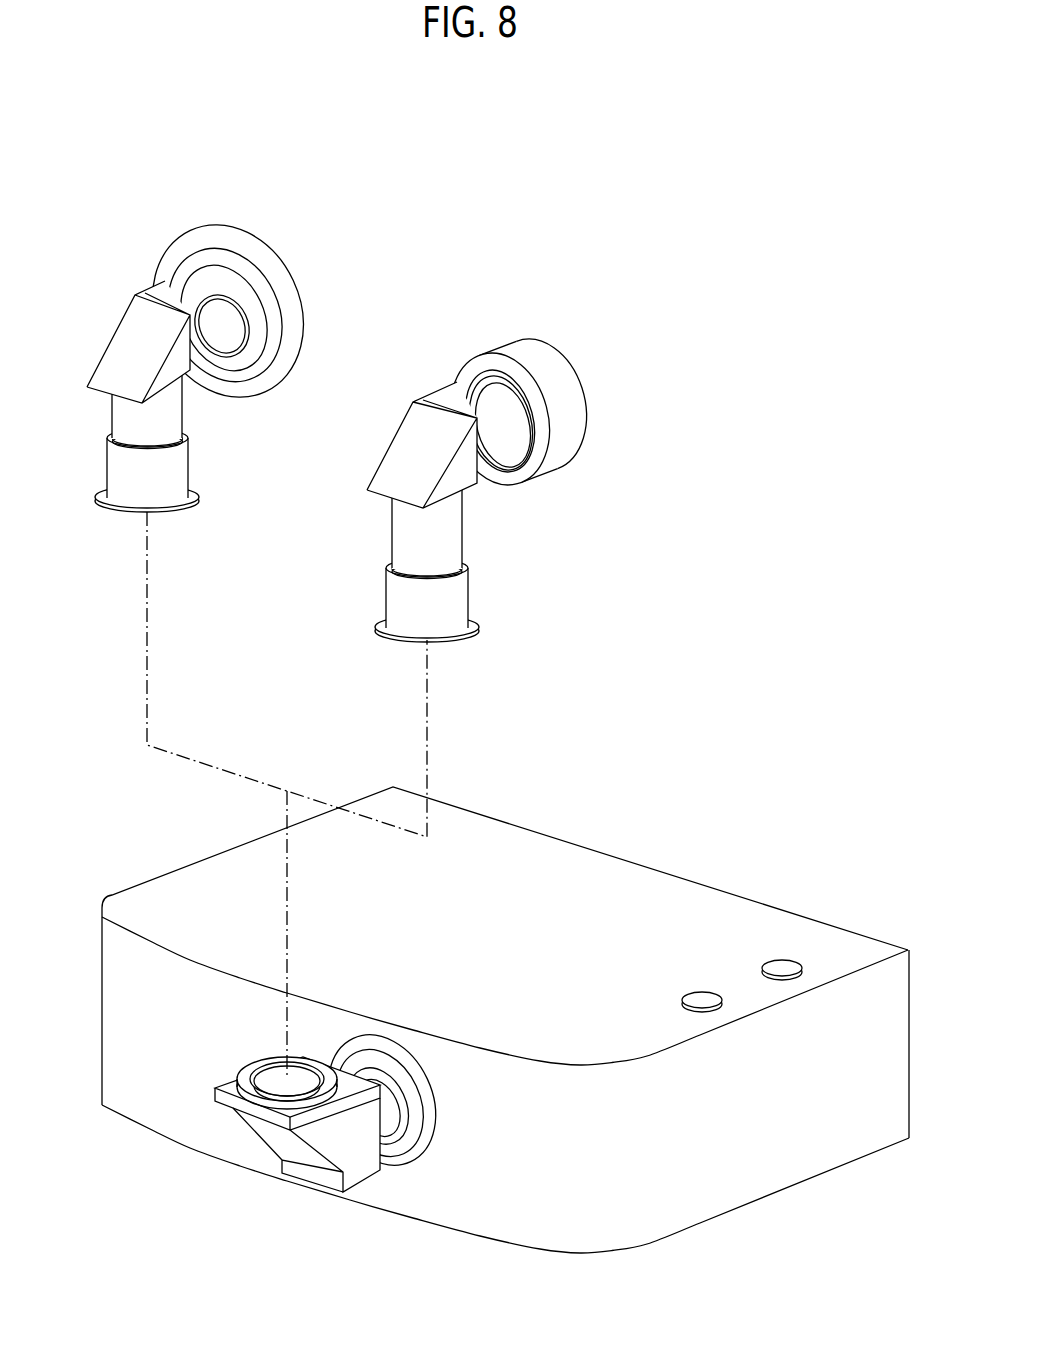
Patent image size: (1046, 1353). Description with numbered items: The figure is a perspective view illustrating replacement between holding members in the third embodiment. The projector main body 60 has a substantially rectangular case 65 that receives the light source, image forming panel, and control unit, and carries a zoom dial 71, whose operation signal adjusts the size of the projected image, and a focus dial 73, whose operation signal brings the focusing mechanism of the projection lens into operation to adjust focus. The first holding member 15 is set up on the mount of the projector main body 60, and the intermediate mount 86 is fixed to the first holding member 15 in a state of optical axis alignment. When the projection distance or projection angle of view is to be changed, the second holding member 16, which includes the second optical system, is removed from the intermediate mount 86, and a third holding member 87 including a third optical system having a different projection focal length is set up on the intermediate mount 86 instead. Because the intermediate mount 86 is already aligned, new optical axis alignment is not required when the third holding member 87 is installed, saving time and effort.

The first holding member 15 is at (306, 1142).
The second holding member 16 is at (243, 221).
The projector main body 60 is at (505, 990).
The case 65 is at (473, 812).
The zoom dial 71 is at (700, 995).
The focus dial 73 is at (780, 965).
The intermediate mount 86 is at (237, 1082).
The third holding member 87 is at (542, 340).